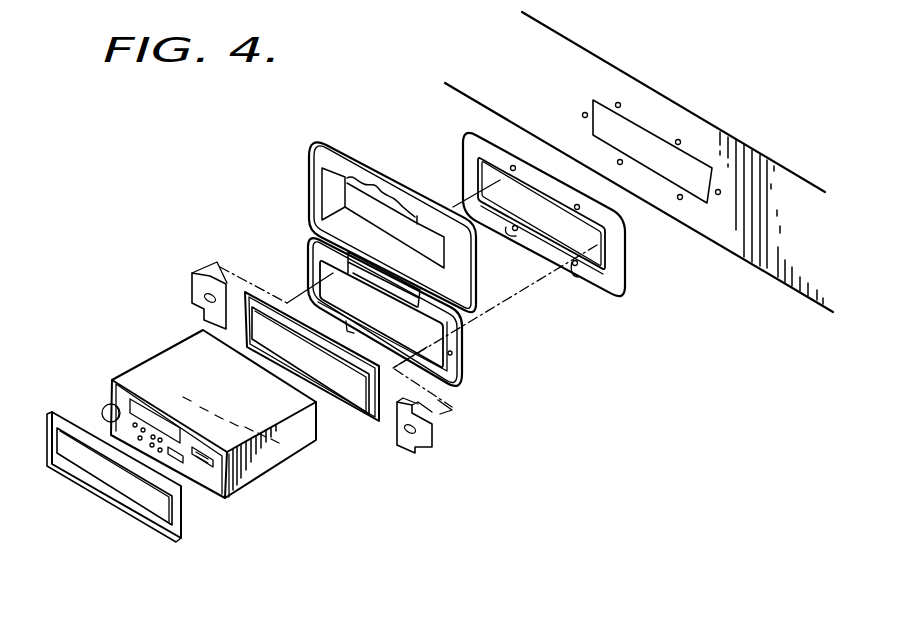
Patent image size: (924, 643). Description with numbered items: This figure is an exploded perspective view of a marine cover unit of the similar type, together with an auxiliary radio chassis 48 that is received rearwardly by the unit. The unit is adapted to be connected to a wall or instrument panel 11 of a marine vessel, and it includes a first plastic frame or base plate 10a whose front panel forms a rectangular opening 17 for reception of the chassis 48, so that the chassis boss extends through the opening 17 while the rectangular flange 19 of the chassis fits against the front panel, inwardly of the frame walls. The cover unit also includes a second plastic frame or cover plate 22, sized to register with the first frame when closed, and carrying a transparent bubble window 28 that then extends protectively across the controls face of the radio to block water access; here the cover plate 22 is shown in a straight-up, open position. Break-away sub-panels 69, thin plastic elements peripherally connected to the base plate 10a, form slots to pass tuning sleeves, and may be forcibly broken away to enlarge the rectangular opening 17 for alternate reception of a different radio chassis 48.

The first plastic frame or base plate 10a is at (476, 360).
The wall or instrument panel 11 is at (754, 236).
The rectangular opening 17 is at (321, 276).
The rectangular flange 19 is at (236, 494).
The second plastic frame or cover plate 22 is at (306, 178).
The transparent bubble window 28 is at (381, 168).
The radio chassis 48 is at (263, 484).
The break-away sub-panel 69 is at (190, 283).